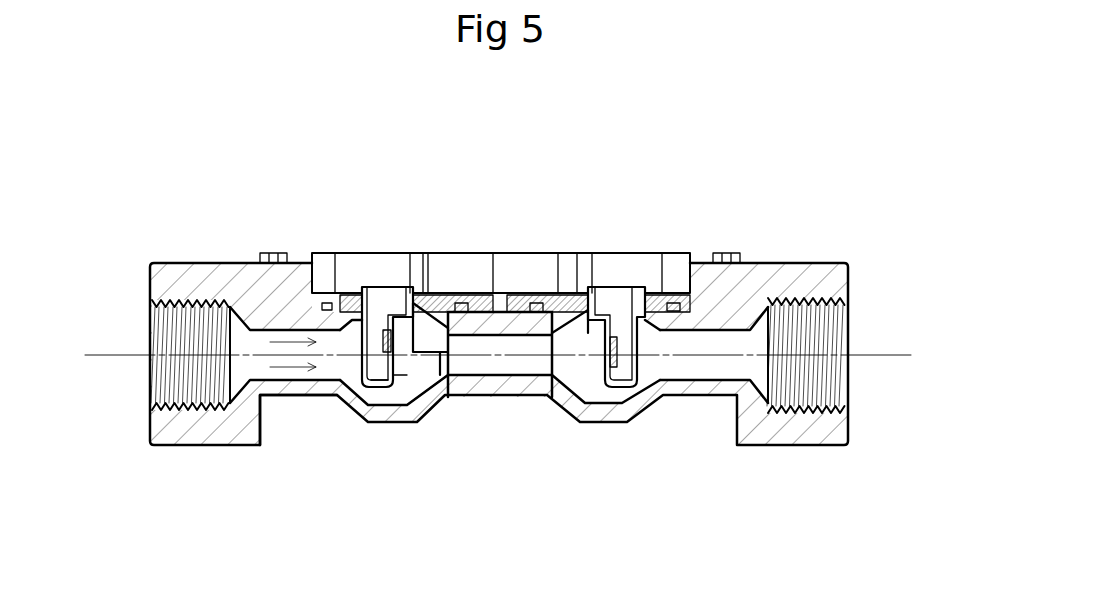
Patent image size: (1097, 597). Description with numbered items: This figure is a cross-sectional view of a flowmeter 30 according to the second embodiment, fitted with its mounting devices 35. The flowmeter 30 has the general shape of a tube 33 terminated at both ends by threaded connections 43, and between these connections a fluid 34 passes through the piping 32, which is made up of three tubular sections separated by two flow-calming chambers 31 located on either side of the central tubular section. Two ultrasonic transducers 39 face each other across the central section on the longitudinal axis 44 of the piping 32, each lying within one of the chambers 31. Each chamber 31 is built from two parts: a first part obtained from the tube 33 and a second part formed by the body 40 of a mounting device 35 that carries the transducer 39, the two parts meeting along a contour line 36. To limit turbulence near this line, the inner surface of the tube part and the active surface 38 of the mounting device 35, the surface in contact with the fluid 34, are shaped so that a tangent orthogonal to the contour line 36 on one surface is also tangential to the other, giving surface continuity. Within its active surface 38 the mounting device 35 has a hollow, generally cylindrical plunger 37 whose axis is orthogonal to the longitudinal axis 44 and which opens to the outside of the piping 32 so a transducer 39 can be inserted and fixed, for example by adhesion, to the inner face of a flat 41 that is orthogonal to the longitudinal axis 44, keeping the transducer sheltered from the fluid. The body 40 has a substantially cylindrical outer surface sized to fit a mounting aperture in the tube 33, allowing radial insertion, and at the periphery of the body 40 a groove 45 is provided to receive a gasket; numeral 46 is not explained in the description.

The flowmeter 30 is at (325, 426).
The flow-calming chamber 31 is at (437, 380).
The piping 32 is at (698, 365).
The tube 33 is at (281, 388).
The fluid 34 is at (292, 342).
The mounting device 35 is at (373, 282).
The contour line 36 is at (423, 375).
The plunger 37 is at (357, 397).
The active surface 38 is at (427, 322).
The ultrasonic transducer 39 is at (388, 337).
The body 40 is at (440, 303).
The flat 41 is at (405, 378).
The threaded connection 43 is at (190, 327).
The longitudinal axis 44 is at (868, 355).
The groove 45 is at (323, 300).
The sensor tip 46 is at (371, 372).